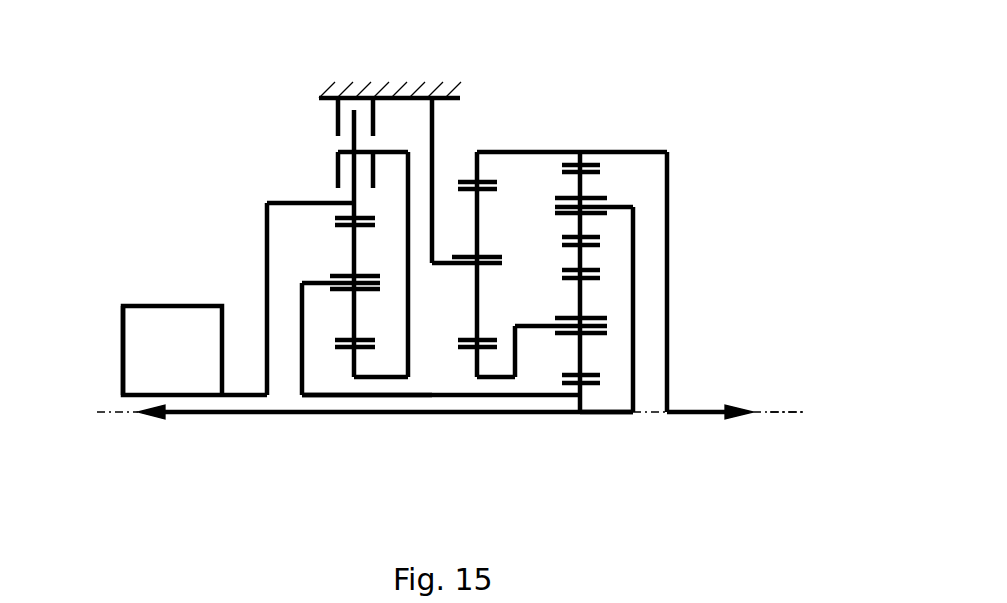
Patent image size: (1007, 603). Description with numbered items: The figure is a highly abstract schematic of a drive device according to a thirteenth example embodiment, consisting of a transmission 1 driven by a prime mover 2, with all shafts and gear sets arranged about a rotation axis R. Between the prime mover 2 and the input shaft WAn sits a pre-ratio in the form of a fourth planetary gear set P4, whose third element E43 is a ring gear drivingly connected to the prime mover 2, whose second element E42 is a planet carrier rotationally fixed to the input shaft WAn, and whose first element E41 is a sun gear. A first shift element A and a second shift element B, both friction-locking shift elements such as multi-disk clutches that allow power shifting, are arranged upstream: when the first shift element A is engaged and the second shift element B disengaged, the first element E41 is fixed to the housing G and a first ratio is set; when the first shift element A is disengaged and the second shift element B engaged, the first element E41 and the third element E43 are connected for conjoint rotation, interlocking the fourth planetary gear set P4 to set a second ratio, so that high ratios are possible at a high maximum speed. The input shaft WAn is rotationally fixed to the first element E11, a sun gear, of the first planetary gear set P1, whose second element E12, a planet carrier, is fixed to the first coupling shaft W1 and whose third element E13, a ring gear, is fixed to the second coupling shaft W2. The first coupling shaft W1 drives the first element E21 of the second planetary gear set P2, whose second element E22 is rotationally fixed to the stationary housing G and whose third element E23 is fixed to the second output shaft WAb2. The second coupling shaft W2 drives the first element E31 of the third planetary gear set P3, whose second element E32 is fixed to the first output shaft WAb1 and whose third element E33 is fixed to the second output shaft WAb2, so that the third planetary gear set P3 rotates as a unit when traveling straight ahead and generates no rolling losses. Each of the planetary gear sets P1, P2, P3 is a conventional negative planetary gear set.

The transmission 1 is at (112, 87).
The prime mover 2 is at (150, 308).
The housing G is at (330, 87).
The first shift element A is at (312, 115).
The second shift element B is at (312, 157).
The third element of the fourth planetary gear set E43 is at (328, 207).
The second element of the fourth planetary gear set E42 is at (335, 280).
The first element of the fourth planetary gear set E41 is at (355, 350).
The third element of the third planetary gear set E33 is at (593, 162).
The second element of the third planetary gear set E32 is at (607, 202).
The first element of the third planetary gear set E31 is at (600, 243).
The third element of the second planetary gear set E23 is at (485, 182).
The second element of the second planetary gear set E22 is at (441, 263).
The first element of the second planetary gear set E21 is at (480, 350).
The third element of the first planetary gear set E13 is at (600, 270).
The second element of the first planetary gear set E12 is at (607, 320).
The first element of the first planetary gear set E11 is at (580, 412).
The first planetary gear set P1 is at (613, 436).
The second planetary gear set P2 is at (472, 438).
The third planetary gear set P3 is at (632, 103).
The fourth planetary gear set P4 is at (314, 380).
The first coupling shaft W1 is at (527, 326).
The second coupling shaft W2 is at (578, 262).
The input shaft WAn is at (325, 412).
The first output shaft WAb1 is at (195, 412).
The second output shaft WAb2 is at (712, 412).
The rotation axis R is at (797, 412).